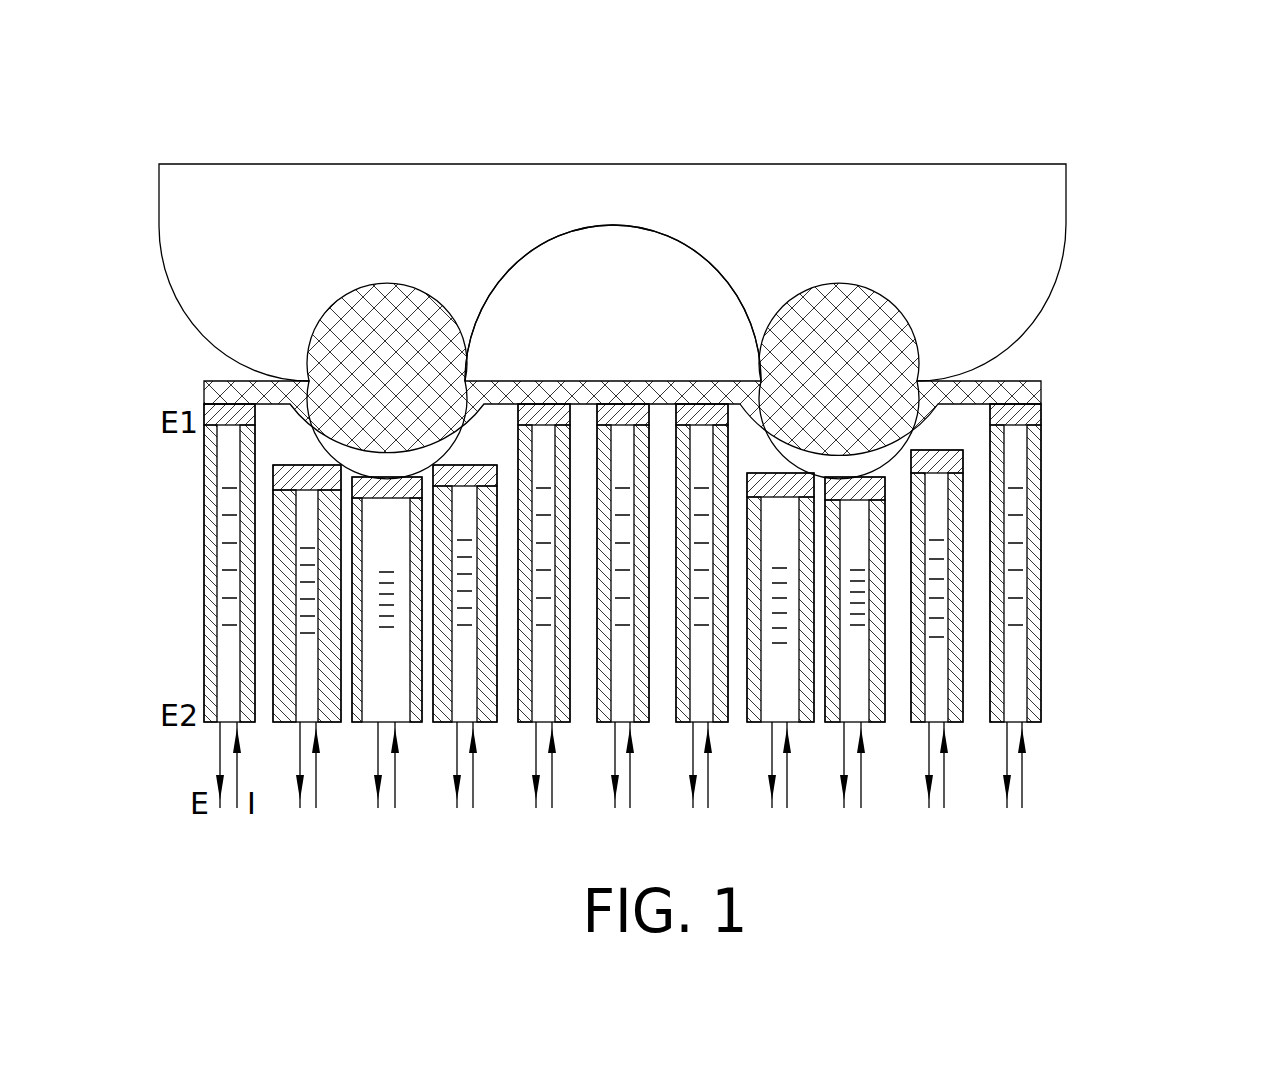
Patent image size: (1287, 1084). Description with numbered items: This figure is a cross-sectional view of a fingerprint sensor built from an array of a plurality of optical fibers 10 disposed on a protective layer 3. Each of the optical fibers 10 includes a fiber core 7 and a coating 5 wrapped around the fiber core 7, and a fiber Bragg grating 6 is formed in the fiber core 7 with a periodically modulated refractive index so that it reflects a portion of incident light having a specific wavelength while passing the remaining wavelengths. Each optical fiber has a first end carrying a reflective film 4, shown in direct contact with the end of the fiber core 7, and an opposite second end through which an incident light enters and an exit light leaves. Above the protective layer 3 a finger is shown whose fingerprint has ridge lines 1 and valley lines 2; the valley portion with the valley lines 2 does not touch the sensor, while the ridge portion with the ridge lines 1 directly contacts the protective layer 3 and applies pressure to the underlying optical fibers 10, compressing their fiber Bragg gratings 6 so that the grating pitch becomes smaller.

The ridge lines 1 is at (387, 453).
The valley lines 2 is at (630, 225).
The protective layer 3 is at (1017, 393).
The reflective film 4 is at (1022, 415).
The coating 5 is at (1030, 467).
The fiber Bragg grating 6 is at (1013, 543).
The fiber core 7 is at (1013, 667).
The optical fibers 10 is at (1121, 601).